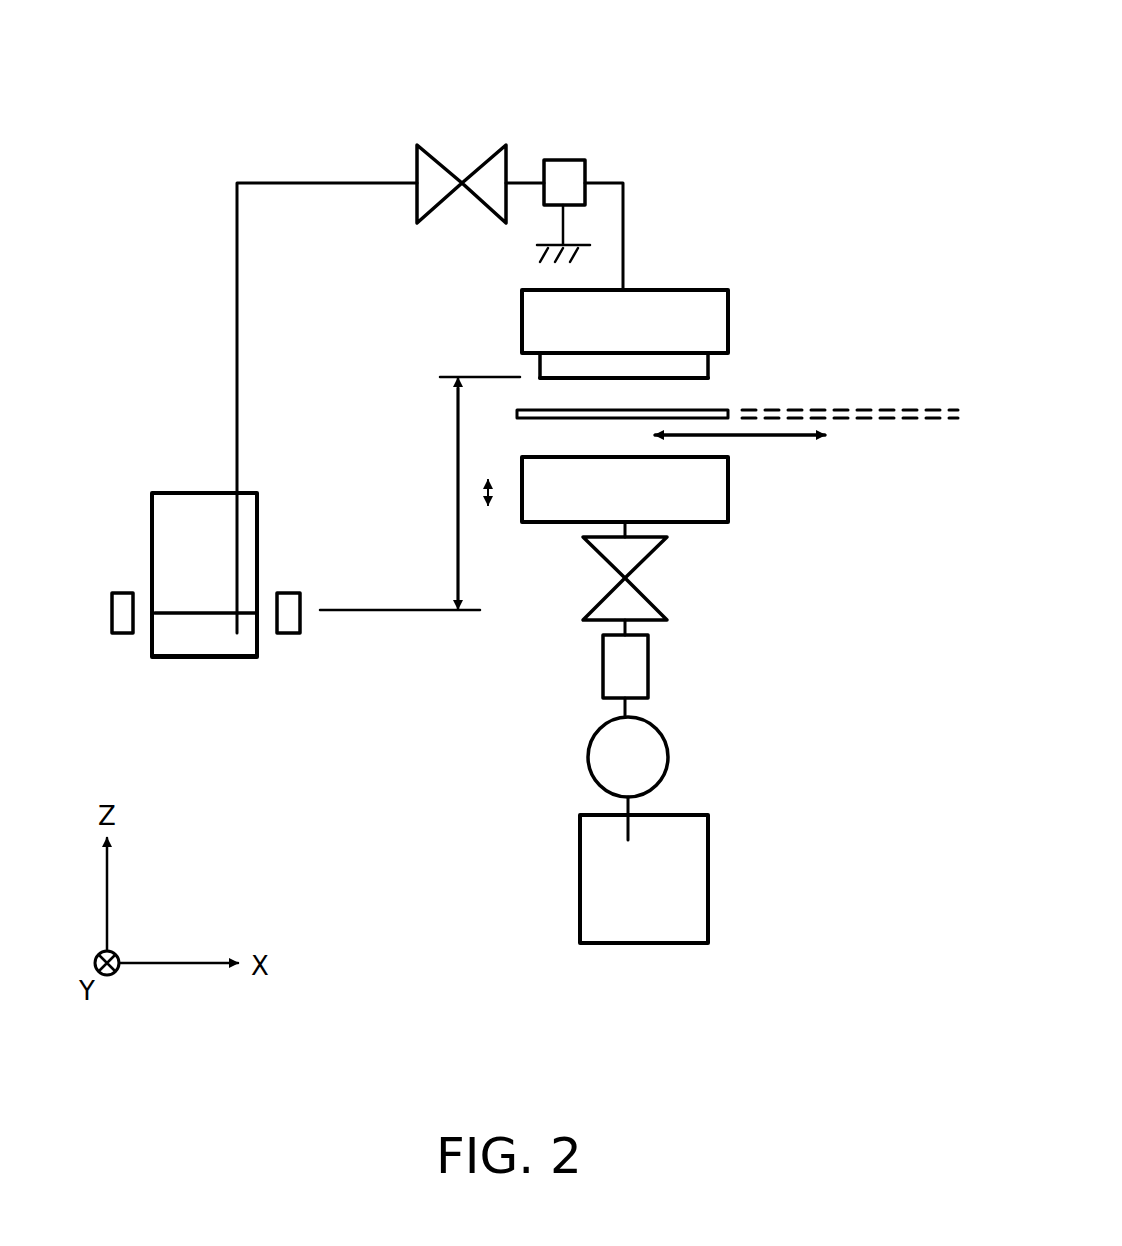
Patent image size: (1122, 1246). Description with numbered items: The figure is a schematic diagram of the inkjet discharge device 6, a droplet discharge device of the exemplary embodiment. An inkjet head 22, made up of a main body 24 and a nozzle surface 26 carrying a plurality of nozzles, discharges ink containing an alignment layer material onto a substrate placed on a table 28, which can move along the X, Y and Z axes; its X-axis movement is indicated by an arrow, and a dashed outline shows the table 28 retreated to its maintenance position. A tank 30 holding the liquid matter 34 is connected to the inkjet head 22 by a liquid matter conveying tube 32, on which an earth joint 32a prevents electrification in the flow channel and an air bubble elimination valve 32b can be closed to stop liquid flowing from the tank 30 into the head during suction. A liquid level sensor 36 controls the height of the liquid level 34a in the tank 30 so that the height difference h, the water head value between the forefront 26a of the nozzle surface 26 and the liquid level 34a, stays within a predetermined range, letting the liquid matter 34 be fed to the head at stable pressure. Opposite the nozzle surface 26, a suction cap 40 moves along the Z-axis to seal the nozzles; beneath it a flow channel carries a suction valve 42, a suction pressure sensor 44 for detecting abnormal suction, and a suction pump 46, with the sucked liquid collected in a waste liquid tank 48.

The inkjet discharge device 6 is at (852, 84).
The inkjet head 22 is at (748, 252).
The main body 24 is at (728, 312).
The nozzle surface 26 is at (708, 368).
The forefront of the nozzle surface 26a is at (680, 380).
The table 28 is at (690, 410).
The tank 30 is at (250, 658).
The liquid matter conveying tube 32 is at (332, 183).
The earth joint 32a is at (585, 165).
The air bubble elimination valve 32b is at (442, 170).
The liquid matter 34 is at (165, 660).
The liquid level 34a is at (243, 612).
The liquid level sensor 36 is at (112, 603).
The suction cap 40 is at (728, 517).
The suction valve 42 is at (652, 550).
The suction pressure sensor 44 is at (648, 668).
The suction pump 46 is at (588, 748).
The waste liquid tank 48 is at (645, 945).
The height difference (water head value) h is at (420, 493).